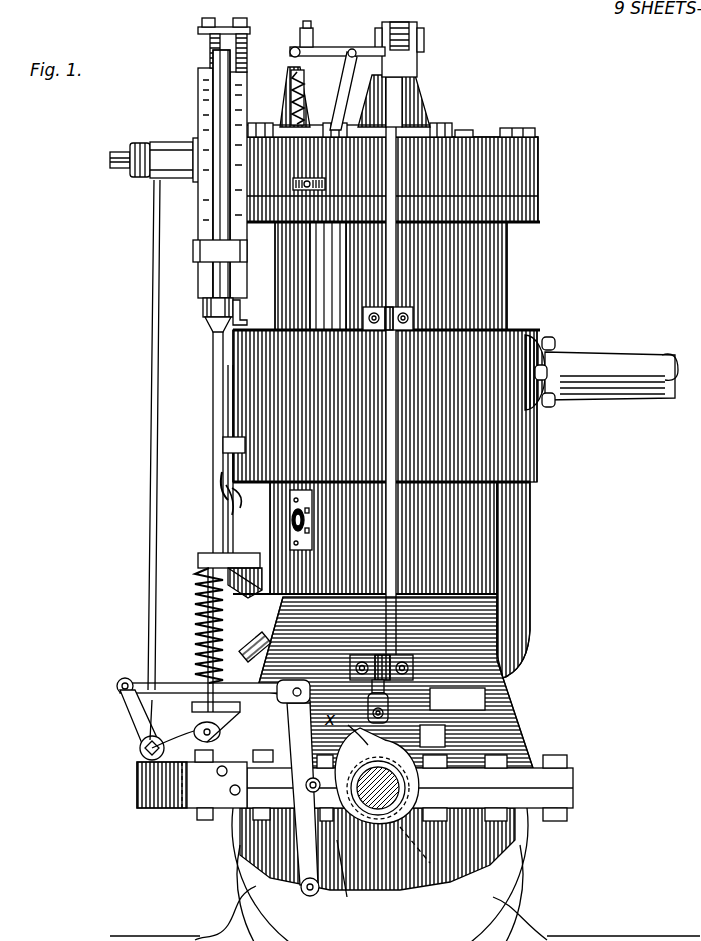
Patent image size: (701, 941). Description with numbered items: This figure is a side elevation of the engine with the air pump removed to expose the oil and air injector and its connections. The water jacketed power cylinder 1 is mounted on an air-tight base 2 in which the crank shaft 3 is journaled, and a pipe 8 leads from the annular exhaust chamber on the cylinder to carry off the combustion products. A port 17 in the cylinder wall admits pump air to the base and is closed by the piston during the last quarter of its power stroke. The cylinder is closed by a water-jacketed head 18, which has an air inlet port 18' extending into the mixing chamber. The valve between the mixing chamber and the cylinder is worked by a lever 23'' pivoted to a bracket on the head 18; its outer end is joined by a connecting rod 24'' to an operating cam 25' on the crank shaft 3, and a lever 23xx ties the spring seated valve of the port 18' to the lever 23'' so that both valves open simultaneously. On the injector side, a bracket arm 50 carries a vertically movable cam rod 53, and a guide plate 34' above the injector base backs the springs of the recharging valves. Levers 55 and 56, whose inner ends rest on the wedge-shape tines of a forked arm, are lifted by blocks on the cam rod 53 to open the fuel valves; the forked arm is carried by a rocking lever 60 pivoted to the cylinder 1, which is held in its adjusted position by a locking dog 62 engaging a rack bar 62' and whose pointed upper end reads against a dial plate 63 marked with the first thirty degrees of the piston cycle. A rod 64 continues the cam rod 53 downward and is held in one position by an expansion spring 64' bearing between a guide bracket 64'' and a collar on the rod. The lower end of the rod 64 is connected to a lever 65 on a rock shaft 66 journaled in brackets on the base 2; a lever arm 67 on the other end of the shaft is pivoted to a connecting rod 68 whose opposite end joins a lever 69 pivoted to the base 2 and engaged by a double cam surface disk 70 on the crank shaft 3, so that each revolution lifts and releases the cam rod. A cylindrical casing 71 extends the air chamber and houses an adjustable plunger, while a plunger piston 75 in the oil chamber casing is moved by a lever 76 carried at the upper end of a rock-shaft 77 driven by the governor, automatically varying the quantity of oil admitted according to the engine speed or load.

The power cylinder 1 is at (316, 297).
The base 2 is at (405, 874).
The crank shaft 3 is at (400, 765).
The pipe 8 is at (607, 356).
The port 17 is at (303, 520).
The head 18 is at (414, 172).
The air inlet port 18' is at (312, 170).
The lever 23xx is at (363, 46).
The lever 23'' is at (423, 71).
The connecting rod 24'' is at (366, 400).
The operating cam 25' is at (395, 682).
The guide plate 34' is at (180, 30).
The bracket arm 50 is at (210, 91).
The cam rod 53 is at (222, 104).
The lever 55 is at (238, 273).
The lever 56 is at (200, 272).
The rocking lever 60 is at (222, 430).
The locking dog 62 is at (243, 508).
The rack bar 62' is at (243, 486).
The dial plate 63 is at (244, 306).
The rod 64 is at (196, 442).
The expansion spring 64' is at (180, 640).
The guide bracket 64'' is at (213, 566).
The lever 65 is at (180, 732).
The rock shaft 66 is at (140, 752).
The lever arm 67 is at (125, 712).
The connecting rod 68 is at (173, 688).
The lever 69 is at (305, 813).
The double cam surface disk 70 is at (352, 879).
The cylindrical casing 71 is at (166, 170).
The plunger piston 75 is at (130, 148).
The lever 76 is at (112, 165).
The rock-shaft 77 is at (154, 338).